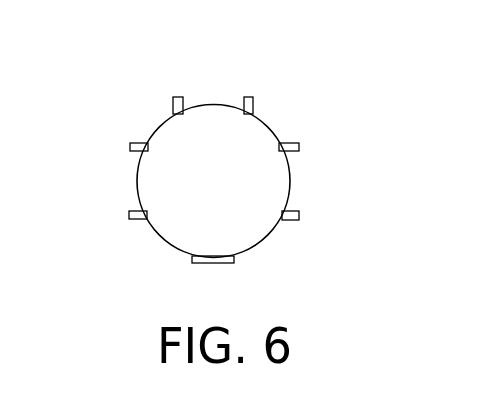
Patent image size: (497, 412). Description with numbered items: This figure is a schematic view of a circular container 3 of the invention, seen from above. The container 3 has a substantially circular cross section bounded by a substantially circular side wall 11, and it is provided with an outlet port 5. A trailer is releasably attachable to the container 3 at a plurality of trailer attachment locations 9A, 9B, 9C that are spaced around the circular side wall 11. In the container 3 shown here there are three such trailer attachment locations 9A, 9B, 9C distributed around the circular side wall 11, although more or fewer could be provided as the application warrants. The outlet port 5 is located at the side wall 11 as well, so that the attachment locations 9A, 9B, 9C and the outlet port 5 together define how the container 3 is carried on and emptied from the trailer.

The container 3 is at (268, 240).
The outlet port 5 is at (223, 263).
The trailer attachment location 9A is at (299, 147).
The trailer attachment location 9B is at (248, 97).
The trailer attachment location 9C is at (130, 147).
The circular side wall 11 is at (162, 238).